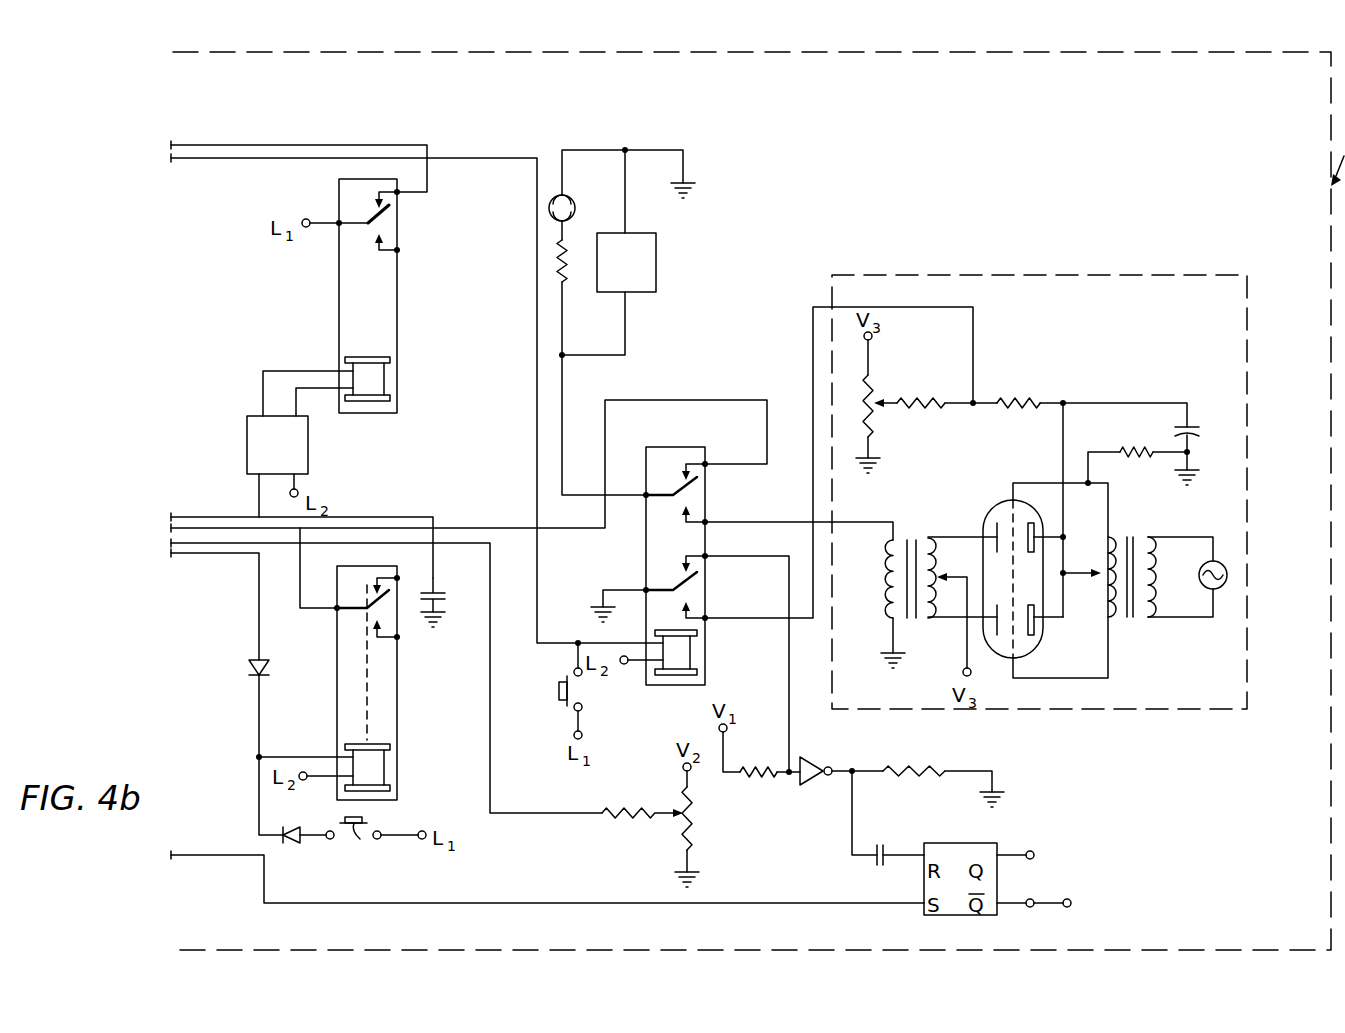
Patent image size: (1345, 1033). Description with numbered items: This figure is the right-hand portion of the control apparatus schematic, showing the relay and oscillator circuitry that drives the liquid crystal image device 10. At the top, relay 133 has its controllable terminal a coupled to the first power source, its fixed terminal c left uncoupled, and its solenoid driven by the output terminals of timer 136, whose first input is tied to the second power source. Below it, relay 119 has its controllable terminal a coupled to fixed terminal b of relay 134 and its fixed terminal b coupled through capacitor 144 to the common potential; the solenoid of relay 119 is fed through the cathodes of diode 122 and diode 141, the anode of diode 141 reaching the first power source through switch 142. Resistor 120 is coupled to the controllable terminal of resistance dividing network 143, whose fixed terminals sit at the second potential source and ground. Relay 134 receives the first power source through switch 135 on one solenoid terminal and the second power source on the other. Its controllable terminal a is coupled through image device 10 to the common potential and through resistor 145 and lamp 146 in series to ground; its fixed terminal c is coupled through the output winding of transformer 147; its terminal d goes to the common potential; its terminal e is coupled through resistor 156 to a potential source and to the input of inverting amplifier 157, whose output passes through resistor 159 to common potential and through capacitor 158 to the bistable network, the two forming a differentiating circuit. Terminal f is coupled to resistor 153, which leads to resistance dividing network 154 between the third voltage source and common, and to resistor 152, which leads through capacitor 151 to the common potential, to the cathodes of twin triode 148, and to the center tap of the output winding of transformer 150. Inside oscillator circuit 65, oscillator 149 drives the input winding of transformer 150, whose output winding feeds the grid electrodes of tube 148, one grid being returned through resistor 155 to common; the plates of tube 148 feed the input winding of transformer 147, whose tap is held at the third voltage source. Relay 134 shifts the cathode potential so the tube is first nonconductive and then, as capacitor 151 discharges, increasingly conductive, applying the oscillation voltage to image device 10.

The image device 10 is at (656, 262).
The oscillator circuit 65 is at (1080, 262).
The relay 119 is at (397, 797).
The resistor 120 is at (616, 818).
The diode 122 is at (266, 670).
The relay 133 is at (397, 413).
The relay 134 is at (656, 685).
The switch 135 is at (559, 692).
The timer D5 136 is at (308, 468).
The diode 141 is at (315, 810).
The switch 142 is at (357, 846).
The resistance dividing network 143 is at (690, 838).
The capacitor 144 is at (440, 591).
The resistor 145 is at (563, 282).
The lamp 146 is at (572, 207).
The transformer 147 is at (882, 592).
The twin triode electron tube 148 is at (1030, 652).
The oscillator 149 is at (1213, 592).
The transformer 150 is at (1140, 537).
The capacitor 151 is at (1197, 436).
The resistor 152 is at (1000, 392).
The resistor 153 is at (920, 408).
The resistance dividing network 154 is at (873, 380).
The resistor 155 is at (1154, 449).
The resistor 156 is at (760, 778).
The inverting amplifier 157 is at (812, 758).
The capacitor 158 is at (877, 862).
The resistor 159 is at (918, 766).